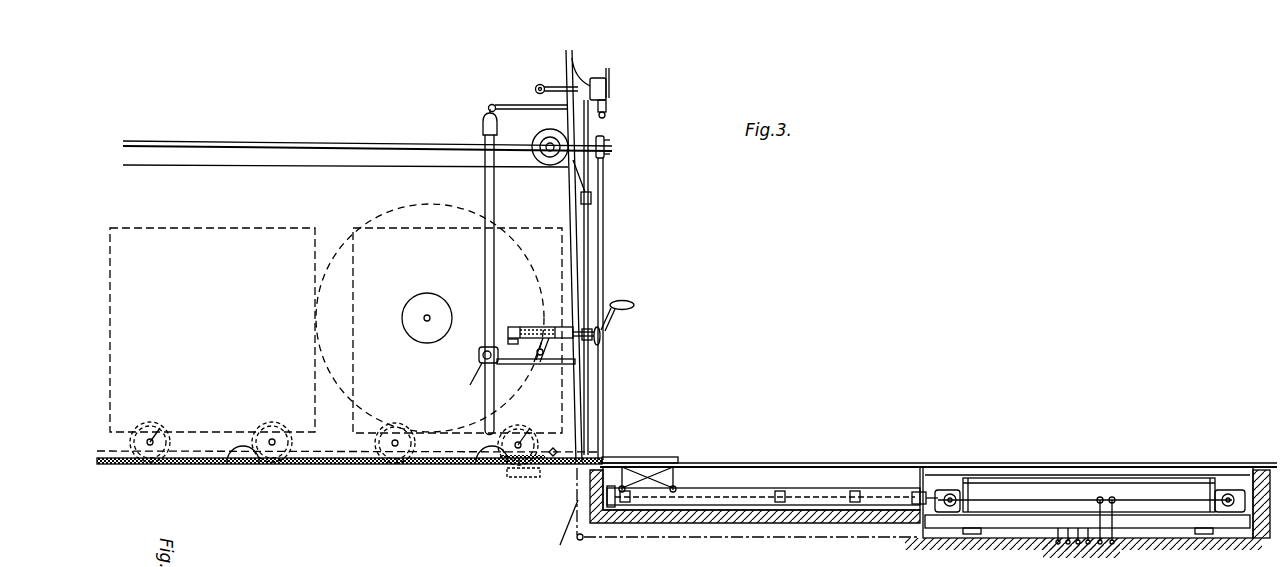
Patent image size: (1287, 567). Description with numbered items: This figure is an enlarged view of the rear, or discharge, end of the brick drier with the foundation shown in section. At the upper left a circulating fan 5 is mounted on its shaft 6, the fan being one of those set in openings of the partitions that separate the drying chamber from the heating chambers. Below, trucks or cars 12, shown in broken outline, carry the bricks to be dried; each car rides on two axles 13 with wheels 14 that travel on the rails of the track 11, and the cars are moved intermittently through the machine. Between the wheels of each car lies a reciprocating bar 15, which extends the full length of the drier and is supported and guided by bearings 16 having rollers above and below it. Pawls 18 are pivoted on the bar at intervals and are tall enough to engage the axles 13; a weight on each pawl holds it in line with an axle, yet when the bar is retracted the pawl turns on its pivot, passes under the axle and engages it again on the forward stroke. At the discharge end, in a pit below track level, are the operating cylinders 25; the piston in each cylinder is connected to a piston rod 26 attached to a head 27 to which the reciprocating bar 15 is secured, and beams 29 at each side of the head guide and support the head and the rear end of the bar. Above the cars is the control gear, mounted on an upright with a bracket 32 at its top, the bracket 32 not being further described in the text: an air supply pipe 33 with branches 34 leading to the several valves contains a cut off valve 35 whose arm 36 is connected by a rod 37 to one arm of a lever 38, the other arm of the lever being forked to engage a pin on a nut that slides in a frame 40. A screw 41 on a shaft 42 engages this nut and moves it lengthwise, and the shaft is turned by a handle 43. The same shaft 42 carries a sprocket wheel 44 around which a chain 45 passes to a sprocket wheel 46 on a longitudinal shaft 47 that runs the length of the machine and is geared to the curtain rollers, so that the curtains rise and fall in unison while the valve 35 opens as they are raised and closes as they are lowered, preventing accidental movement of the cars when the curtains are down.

The circulating fan 5 is at (414, 205).
The shaft 6 is at (426, 321).
The track 11 is at (603, 465).
The truck or car 12 is at (206, 434).
The axle 13 is at (160, 428).
The wheel 14 is at (145, 424).
The reciprocating bar 15 is at (656, 458).
The bearing 16 is at (557, 451).
The pawl 18 is at (224, 464).
The operating cylinder 25 is at (1087, 512).
The piston rod 26 is at (914, 492).
The head 27 is at (677, 480).
The beam 29 is at (771, 490).
The bracket 32 is at (593, 84).
The air supply pipe 33 is at (495, 290).
The branch 34 is at (527, 105).
The cut off valve 35 is at (479, 355).
The arm 36 is at (468, 382).
The rod 37 is at (520, 364).
The lever 38 is at (584, 347).
The frame 40 is at (532, 327).
The screw 41 is at (527, 339).
The shaft 42 is at (600, 347).
The handle 43 is at (630, 309).
The sprocket wheel 44 is at (604, 337).
The chain 45 is at (600, 256).
The sprocket wheel 46 is at (606, 150).
The longitudinal shaft 47 is at (391, 152).